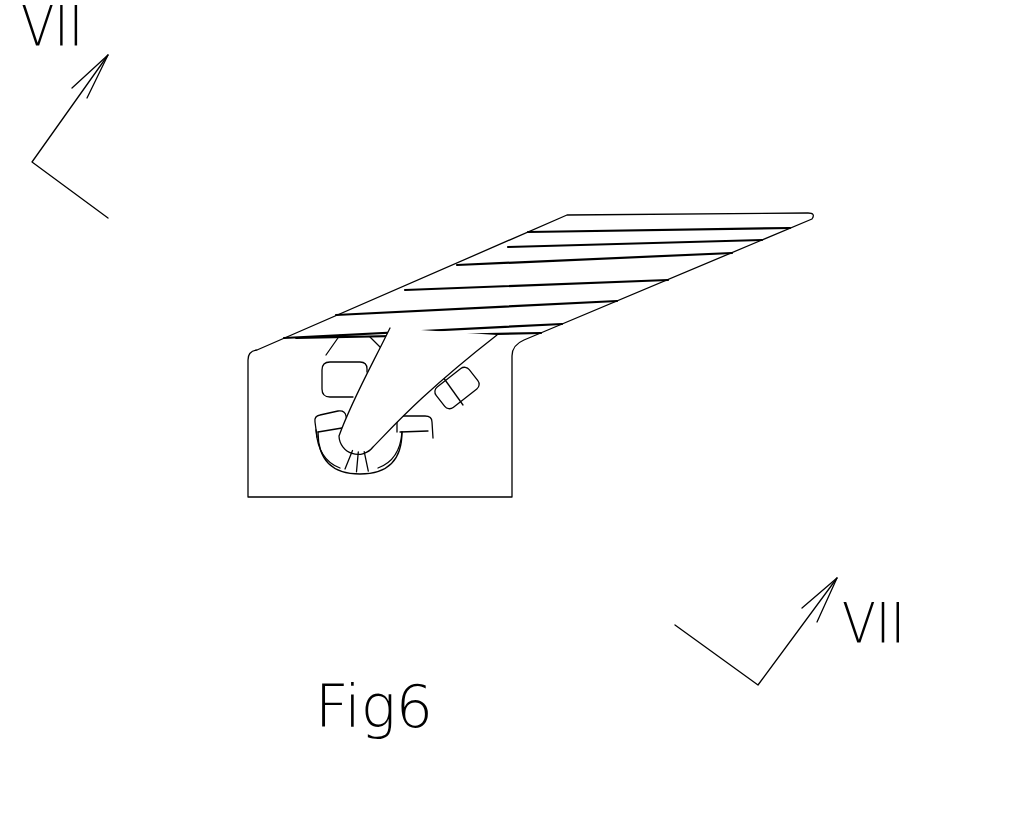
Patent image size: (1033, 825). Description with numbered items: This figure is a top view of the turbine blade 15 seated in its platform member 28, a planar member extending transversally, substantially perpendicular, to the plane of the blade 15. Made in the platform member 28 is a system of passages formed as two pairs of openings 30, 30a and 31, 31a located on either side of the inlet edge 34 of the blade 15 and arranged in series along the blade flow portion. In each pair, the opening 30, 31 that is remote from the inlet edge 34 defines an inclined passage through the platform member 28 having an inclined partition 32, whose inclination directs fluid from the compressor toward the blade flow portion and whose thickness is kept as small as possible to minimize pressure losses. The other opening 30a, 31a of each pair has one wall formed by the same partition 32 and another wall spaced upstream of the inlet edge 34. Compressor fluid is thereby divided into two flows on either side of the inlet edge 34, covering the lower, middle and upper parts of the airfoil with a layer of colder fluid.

The blade 15 is at (338, 449).
The platform member 28 is at (478, 468).
The opening 30 is at (345, 375).
The opening 30a is at (330, 440).
The opening 31 is at (463, 388).
The opening 31a is at (392, 453).
The inclined partition 32 is at (340, 403).
The inlet edge 34 is at (363, 472).